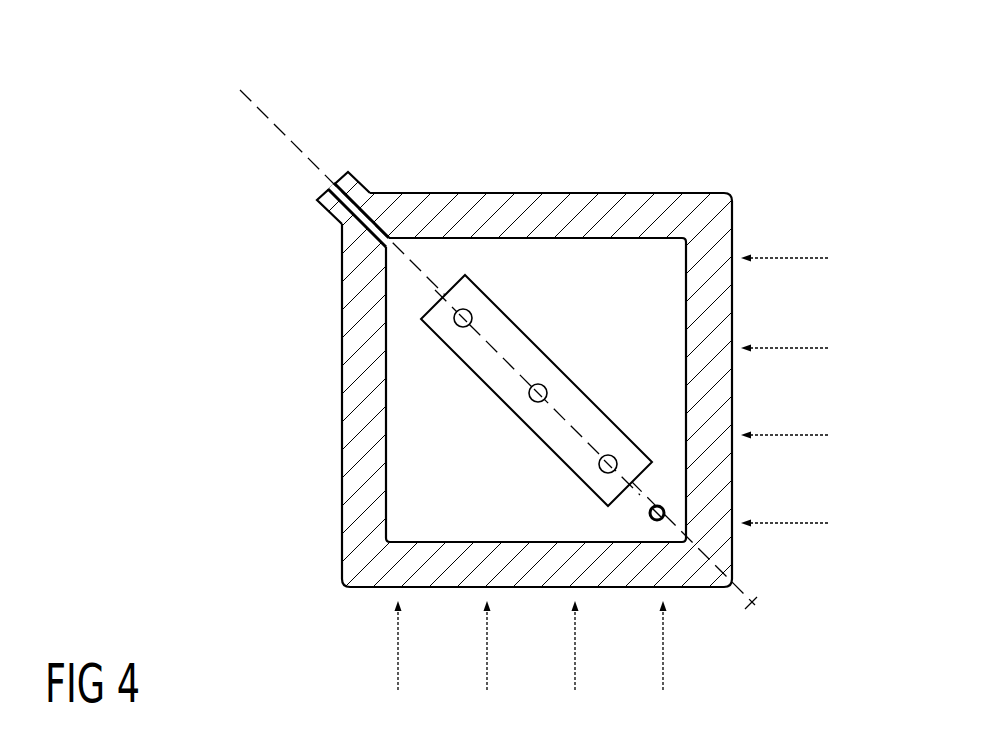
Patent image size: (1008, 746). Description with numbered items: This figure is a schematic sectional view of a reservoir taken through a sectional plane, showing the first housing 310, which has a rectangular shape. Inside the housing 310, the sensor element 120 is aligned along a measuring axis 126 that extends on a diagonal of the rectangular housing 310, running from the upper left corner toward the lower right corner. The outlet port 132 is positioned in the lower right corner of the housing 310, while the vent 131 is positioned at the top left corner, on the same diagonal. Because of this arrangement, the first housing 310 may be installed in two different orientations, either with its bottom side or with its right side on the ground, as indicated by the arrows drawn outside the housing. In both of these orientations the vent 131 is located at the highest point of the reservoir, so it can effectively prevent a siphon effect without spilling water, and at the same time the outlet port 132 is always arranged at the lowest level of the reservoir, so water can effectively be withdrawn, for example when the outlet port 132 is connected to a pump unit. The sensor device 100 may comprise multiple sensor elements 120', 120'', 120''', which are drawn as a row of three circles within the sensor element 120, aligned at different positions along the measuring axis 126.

The sensor device 100 is at (504, 317).
The first housing 310 is at (744, 204).
The vent 131 is at (340, 166).
The sensor element 120 is at (536, 308).
The sensor element 120' is at (363, 330).
The sensor element 120'' is at (401, 413).
The sensor element 120''' is at (436, 491).
The outlet port 132 is at (667, 490).
The measuring axis 126 is at (756, 602).